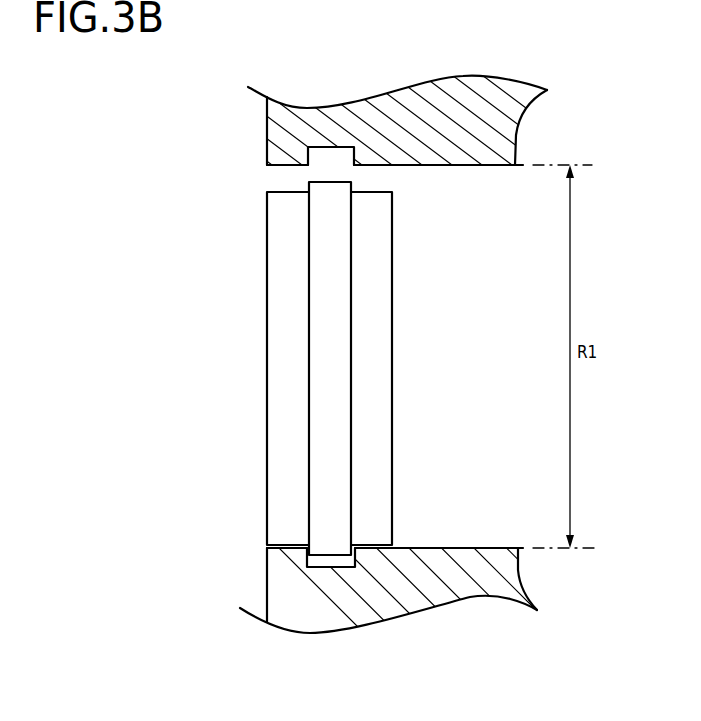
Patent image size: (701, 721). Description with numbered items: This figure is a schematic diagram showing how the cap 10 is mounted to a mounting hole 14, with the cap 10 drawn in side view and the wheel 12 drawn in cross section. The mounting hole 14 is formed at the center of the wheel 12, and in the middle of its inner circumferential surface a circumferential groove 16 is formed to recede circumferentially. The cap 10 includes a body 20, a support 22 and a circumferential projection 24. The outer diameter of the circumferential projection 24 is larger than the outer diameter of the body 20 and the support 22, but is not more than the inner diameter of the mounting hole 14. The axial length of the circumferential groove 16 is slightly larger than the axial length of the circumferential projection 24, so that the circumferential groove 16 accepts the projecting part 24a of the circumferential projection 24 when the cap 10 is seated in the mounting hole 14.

The cap 10 is at (249, 245).
The wheel 12 is at (382, 109).
The mounting hole 14 is at (432, 163).
The circumferential groove 16 is at (337, 145).
The body 20 is at (300, 364).
The support 22 is at (368, 300).
The circumferential projection 24 is at (304, 425).
The projecting part 24a is at (312, 552).